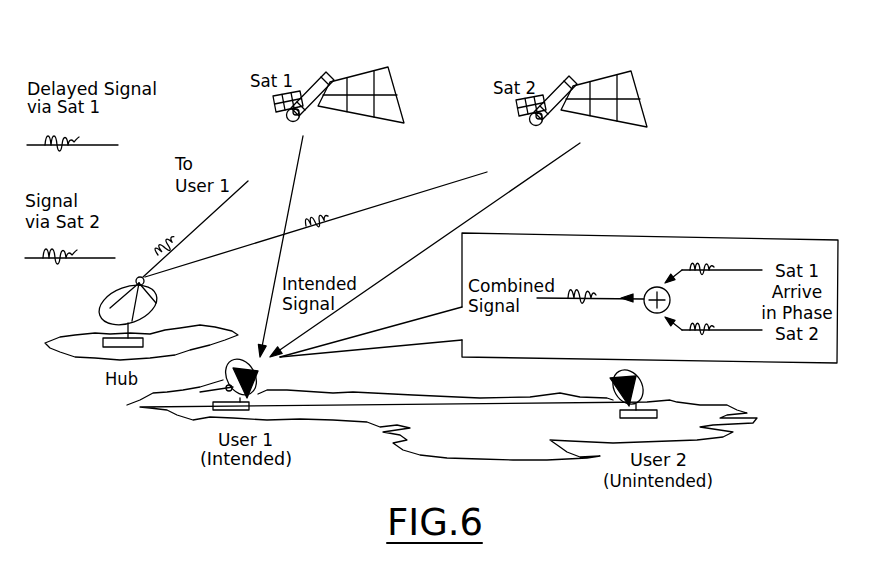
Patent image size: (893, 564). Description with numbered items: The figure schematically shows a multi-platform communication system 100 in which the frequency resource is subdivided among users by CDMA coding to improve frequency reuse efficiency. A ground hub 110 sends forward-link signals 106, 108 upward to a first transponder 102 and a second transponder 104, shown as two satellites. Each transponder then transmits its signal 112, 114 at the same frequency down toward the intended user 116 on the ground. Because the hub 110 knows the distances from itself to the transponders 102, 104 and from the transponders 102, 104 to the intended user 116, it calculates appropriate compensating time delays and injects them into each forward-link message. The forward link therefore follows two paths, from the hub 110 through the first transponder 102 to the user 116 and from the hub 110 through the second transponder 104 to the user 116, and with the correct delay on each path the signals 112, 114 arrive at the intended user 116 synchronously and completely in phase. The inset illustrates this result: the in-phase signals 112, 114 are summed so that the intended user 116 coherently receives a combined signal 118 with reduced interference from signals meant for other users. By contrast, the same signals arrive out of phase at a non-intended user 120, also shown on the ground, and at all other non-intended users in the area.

The multi-platform communication system 100 is at (424, 33).
The first transponder 102 is at (330, 76).
The second transponder 104 is at (578, 82).
The signal to first transponder 106 is at (209, 216).
The signal to second transponder 108 is at (413, 192).
The ground hub 110 is at (99, 298).
The transmitted signal from first transponder 112 is at (300, 160).
The transmitted signal from second transponder 114 is at (563, 155).
The intended user 116 is at (211, 392).
The combined signal 118 is at (607, 296).
The non-intended user 120 is at (648, 380).